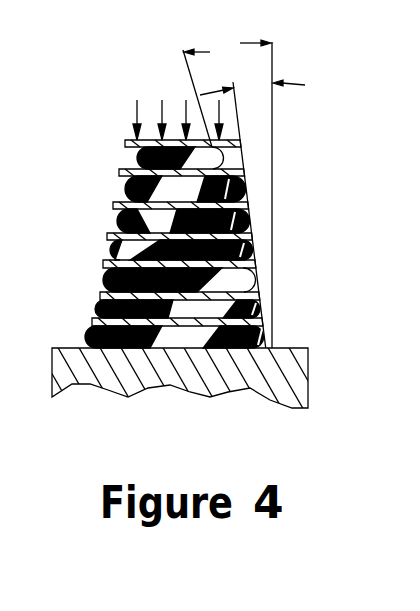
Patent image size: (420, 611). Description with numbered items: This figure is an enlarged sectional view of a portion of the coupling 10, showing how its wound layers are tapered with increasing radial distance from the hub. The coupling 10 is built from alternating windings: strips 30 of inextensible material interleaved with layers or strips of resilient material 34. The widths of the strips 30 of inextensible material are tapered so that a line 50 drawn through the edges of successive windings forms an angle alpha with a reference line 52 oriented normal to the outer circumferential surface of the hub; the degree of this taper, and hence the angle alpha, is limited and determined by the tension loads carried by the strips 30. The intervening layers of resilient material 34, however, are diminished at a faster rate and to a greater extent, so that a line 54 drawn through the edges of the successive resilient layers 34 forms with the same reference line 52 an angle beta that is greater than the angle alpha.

The coupling 10 is at (84, 144).
The strips of inextensible material 30 is at (125, 144).
The layers or strips of resilient material 34 is at (110, 253).
The line drawn through the edges of successive windings 50 is at (243, 163).
The reference line 52 is at (272, 228).
The line drawn through the edges of successive layers of resilient material 54 is at (182, 66).